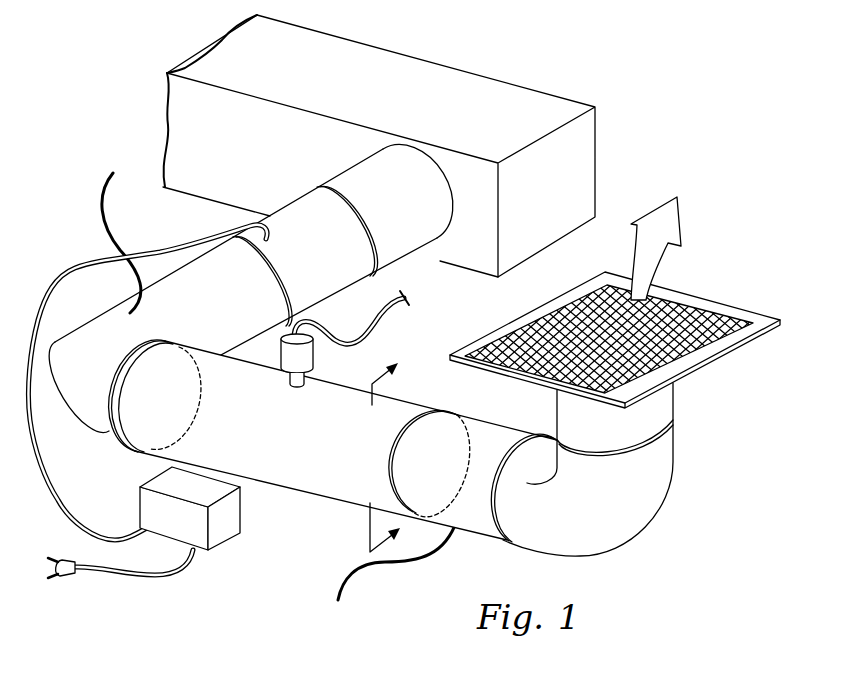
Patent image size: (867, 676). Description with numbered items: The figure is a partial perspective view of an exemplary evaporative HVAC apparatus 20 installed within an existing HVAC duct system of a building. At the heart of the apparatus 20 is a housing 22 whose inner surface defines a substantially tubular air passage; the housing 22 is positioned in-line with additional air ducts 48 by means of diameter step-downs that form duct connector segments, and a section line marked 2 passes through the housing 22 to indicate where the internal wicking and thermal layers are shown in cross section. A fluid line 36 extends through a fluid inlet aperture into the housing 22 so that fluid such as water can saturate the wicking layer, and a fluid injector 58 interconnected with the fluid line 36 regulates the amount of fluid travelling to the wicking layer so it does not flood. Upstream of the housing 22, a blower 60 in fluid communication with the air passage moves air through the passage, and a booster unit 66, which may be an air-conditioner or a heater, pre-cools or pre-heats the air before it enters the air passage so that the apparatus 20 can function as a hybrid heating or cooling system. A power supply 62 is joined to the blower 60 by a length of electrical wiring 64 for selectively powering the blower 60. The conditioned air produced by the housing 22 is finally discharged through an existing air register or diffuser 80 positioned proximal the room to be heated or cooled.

The evaporative HVAC apparatus 20 is at (600, 78).
The housing 22 is at (303, 488).
The fluid line 36 is at (387, 323).
The additional air ducts 48 is at (460, 72).
The fluid injector 58 is at (313, 357).
The blower 60 is at (300, 212).
The power supply 62 is at (163, 481).
The electrical wiring 64 is at (76, 266).
The booster unit 66 is at (386, 155).
The air register or diffuser 80 is at (722, 306).
The section line 2- 2 is at (396, 449).